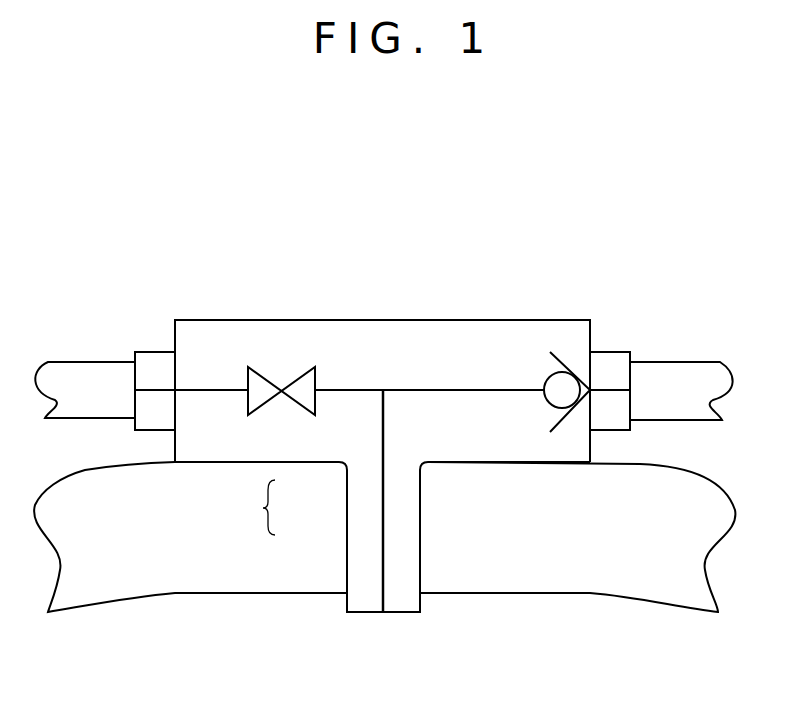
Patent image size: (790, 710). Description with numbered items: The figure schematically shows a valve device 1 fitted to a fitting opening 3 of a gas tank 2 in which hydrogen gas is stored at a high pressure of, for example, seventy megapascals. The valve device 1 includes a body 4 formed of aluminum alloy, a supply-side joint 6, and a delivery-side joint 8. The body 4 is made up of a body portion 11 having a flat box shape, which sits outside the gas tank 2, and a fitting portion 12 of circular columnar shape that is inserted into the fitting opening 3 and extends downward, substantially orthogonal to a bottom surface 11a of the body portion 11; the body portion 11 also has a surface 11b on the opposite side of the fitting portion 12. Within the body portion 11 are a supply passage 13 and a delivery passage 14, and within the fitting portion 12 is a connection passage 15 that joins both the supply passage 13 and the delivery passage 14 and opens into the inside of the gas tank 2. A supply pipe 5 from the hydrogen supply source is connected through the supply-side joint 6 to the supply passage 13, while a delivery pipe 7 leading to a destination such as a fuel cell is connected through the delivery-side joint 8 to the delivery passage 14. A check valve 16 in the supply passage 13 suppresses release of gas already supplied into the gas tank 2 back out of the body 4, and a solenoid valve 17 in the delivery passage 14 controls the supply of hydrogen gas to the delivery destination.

The valve device 1 is at (78, 260).
The gas tank 2 is at (76, 478).
The fitting opening 3 is at (413, 503).
The body 4 is at (260, 507).
The supply pipe 5 is at (680, 368).
The supply-side joint 6 is at (612, 358).
The delivery pipe 7 is at (87, 372).
The delivery-side joint 8 is at (155, 360).
The body portion 11 is at (295, 456).
The bottom surface 11a is at (218, 462).
The right upper surface portion 11b is at (592, 465).
The fitting portion 12 is at (350, 520).
The supply passage 13 is at (445, 388).
The delivery passage 14 is at (203, 388).
The connection passage 15 is at (385, 542).
The check valve 16 is at (565, 352).
The solenoid valve 17 is at (270, 370).